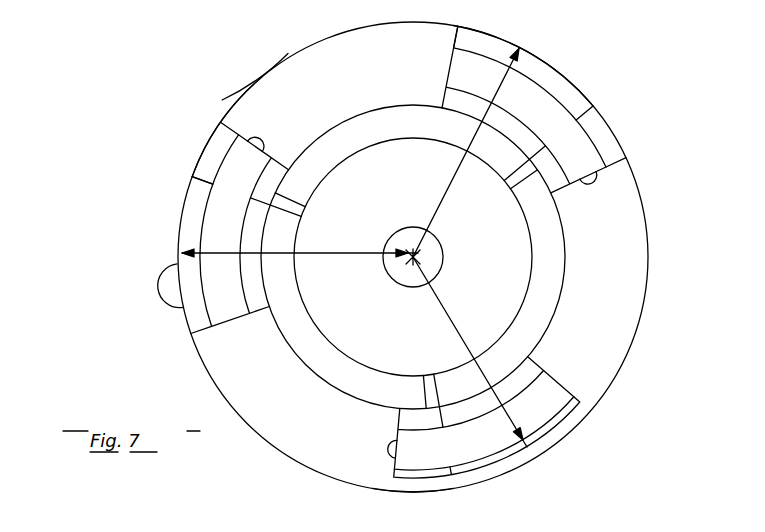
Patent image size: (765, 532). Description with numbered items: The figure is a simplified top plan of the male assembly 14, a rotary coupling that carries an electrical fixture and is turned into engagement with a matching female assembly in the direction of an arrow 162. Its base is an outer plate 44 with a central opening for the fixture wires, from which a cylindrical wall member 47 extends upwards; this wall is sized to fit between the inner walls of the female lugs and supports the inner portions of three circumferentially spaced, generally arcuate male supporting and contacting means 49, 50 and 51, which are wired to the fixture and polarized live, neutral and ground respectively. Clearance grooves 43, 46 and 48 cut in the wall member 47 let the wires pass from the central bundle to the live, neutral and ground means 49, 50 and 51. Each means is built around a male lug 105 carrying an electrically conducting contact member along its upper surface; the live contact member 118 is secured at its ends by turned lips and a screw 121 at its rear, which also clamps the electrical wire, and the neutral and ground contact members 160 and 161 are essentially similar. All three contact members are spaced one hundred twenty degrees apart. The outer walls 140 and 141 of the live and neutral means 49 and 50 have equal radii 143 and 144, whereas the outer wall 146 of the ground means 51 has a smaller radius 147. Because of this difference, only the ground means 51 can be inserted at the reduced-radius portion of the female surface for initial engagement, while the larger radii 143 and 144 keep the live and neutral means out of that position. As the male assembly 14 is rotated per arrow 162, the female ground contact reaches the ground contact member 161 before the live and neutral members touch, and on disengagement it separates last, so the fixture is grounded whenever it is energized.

The male assembly 14 is at (590, 327).
The outer plate 44 is at (275, 90).
The live male supporting and contacting means 49 is at (548, 52).
The ground male supporting and contacting means 51 is at (438, 489).
The arrow 162 is at (152, 126).
The cylindrical wall member 47 is at (545, 258).
The outer wall of neutral male means 141 is at (183, 258).
The neutral male supporting and contacting means 50 is at (190, 196).
The neutral contact member 160 is at (213, 292).
The clearance groove 46 is at (290, 212).
The contact member 118 is at (565, 142).
The male lug 105 is at (533, 68).
The outer wall of live male means 140 is at (487, 28).
The screw 121 is at (592, 185).
The clearance groove 43 is at (523, 177).
The radius 143 is at (450, 182).
The radius 144 is at (310, 255).
The radius 147 is at (452, 315).
The clearance groove 48 is at (423, 393).
The outer wall of ground male means 146 is at (545, 426).
The ground contact member 161 is at (518, 445).